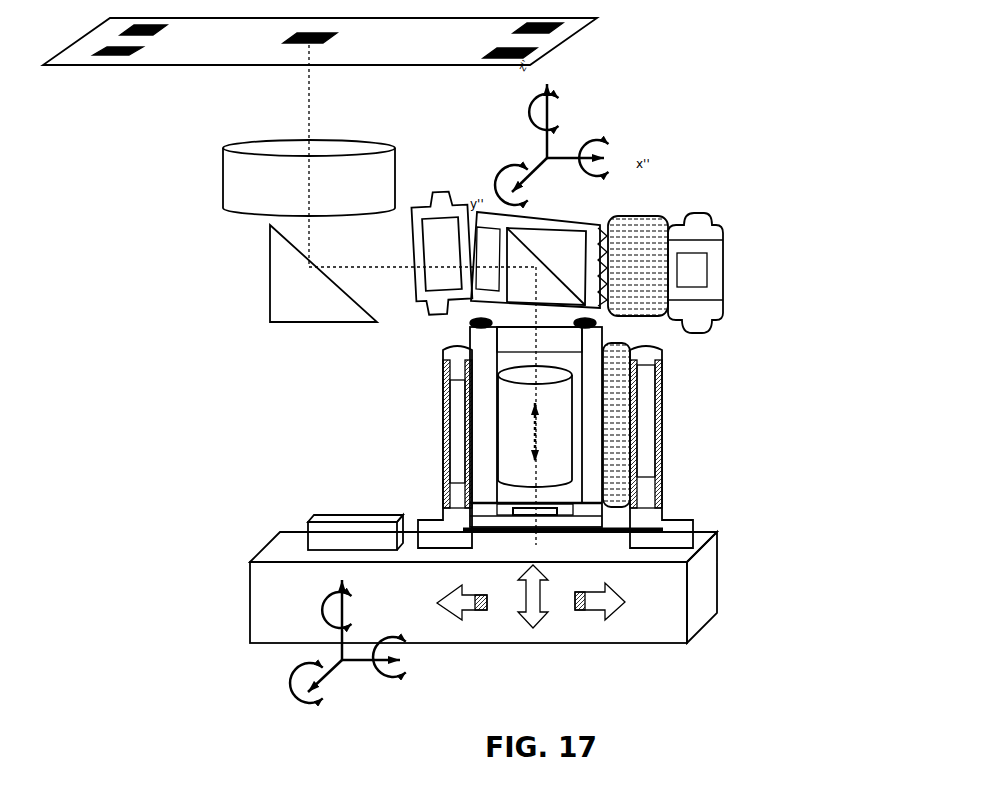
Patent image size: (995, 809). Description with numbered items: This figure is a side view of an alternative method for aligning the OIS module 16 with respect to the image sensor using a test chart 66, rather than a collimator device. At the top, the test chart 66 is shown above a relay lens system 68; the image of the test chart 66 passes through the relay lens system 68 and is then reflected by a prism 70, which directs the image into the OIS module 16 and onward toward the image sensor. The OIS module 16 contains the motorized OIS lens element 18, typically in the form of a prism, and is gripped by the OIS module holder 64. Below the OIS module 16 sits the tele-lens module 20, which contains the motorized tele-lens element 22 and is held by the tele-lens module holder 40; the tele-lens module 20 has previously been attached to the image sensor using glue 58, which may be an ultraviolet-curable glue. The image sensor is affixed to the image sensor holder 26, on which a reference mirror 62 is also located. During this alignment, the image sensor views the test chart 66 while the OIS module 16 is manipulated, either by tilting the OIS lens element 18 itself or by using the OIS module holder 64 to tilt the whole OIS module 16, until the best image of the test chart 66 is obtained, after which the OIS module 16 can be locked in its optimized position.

The OIS module 16 is at (592, 228).
The OIS lens element 18 is at (574, 276).
The tele-lens module 20 is at (485, 466).
The tele-lens element 22 is at (514, 427).
The image sensor holder 26 is at (283, 592).
The tele-lens module holder 40 is at (652, 432).
The glue 58 is at (462, 324).
The reference mirror 62 is at (323, 523).
The OIS module holder 64 is at (703, 279).
The test chart 66 is at (545, 40).
The relay lens system 68 is at (262, 180).
The prism 70 is at (300, 297).